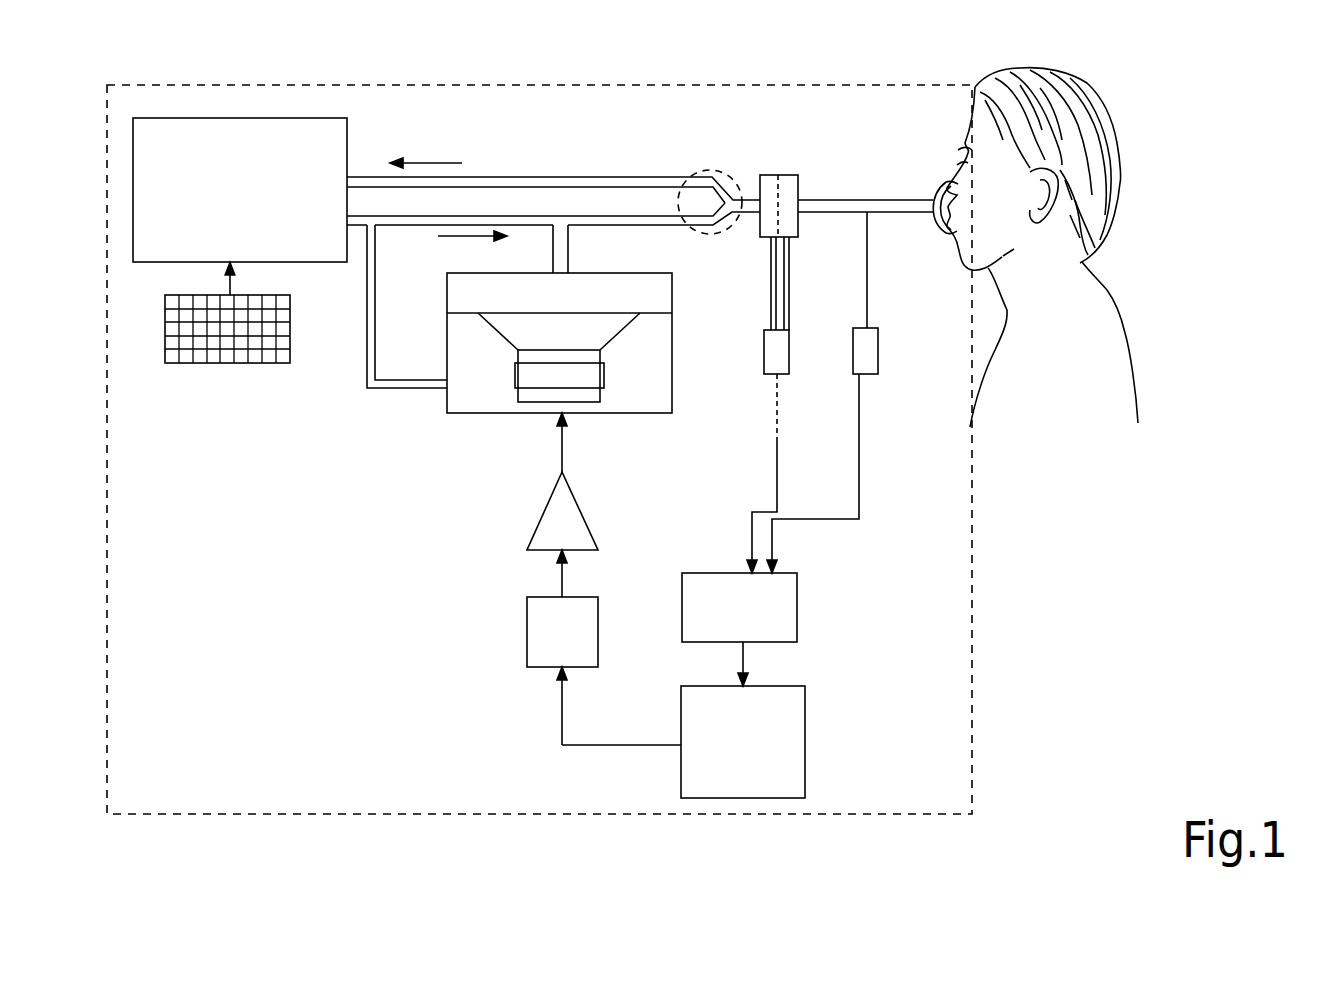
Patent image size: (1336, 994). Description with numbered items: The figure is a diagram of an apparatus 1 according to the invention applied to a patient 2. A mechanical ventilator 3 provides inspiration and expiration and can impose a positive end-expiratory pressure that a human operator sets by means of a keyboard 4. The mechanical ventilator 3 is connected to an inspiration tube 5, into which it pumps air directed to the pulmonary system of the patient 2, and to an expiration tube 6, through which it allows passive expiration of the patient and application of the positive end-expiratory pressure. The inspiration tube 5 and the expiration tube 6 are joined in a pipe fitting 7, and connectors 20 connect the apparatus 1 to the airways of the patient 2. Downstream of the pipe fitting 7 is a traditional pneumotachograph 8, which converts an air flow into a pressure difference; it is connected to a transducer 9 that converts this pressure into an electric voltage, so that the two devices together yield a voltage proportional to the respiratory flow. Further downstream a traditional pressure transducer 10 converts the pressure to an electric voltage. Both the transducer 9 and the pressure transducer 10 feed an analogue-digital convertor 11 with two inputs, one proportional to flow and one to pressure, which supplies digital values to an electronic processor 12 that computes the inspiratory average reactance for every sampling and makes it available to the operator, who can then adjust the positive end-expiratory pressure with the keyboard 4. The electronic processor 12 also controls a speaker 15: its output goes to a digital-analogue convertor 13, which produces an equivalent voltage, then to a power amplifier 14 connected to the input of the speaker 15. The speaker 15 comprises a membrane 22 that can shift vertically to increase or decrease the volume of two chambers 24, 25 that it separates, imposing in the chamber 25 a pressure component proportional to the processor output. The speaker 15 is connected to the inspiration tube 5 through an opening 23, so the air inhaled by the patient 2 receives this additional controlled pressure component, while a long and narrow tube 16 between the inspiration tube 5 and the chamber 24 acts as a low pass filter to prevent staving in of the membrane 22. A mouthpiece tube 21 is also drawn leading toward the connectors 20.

The apparatus 1 is at (507, 85).
The patient 2 is at (1100, 99).
The mechanical ventilator 3 is at (282, 262).
The keyboard 4 is at (255, 363).
The inspiration tube 5 is at (357, 223).
The expiration tube 6 is at (361, 180).
The pipe fitting 7 is at (720, 165).
The pneumotachograph 8 is at (787, 178).
The transducer 9 is at (770, 357).
The pressure transducer 10 is at (860, 362).
The analogue-digital convertor 11 is at (697, 572).
The electronic processor 12 is at (806, 712).
The digital-analogue convertor 13 is at (532, 670).
The power amplifier 14 is at (537, 528).
The speaker 15 is at (457, 415).
The long and narrow tube 16 is at (385, 390).
The connectors 20 is at (940, 186).
The mouthpiece tube 21 is at (830, 212).
The membrane 22 is at (642, 313).
The opening 23 is at (558, 258).
The chamber 24 is at (647, 404).
The chamber 25 is at (607, 280).